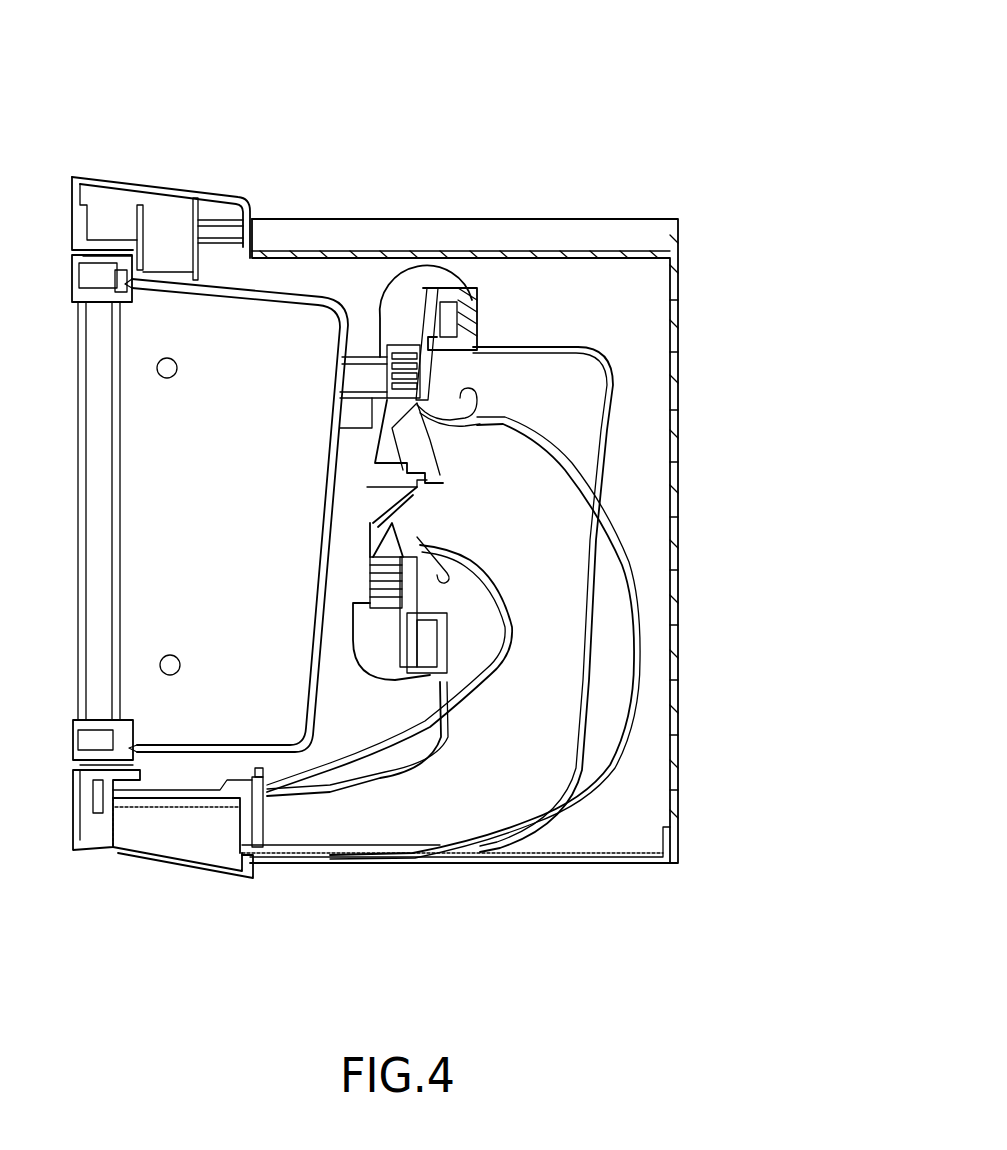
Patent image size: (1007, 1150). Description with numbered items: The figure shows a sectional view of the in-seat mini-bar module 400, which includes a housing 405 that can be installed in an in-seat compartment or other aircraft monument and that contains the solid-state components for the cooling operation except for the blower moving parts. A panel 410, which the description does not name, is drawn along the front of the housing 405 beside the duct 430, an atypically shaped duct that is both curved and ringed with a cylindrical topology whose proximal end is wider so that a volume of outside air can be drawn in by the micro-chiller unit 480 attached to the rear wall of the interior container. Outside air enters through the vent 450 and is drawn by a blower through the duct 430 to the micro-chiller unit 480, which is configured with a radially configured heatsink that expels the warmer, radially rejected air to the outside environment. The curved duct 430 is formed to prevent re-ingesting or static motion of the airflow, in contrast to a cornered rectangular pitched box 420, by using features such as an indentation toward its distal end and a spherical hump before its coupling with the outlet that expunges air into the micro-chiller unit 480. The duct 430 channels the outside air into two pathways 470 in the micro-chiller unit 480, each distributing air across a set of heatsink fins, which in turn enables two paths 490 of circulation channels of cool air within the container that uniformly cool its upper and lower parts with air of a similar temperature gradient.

The in-seat mini-bar module 400 is at (680, 78).
The housing 405 is at (588, 220).
The front panel 410 is at (322, 297).
The cornered rectangular pitched box 420 is at (605, 381).
The duct 430 is at (618, 550).
The vent 450 is at (137, 850).
The pathways 470 is at (445, 450).
The micro-chiller unit 480 is at (353, 470).
The paths 490 is at (249, 402).